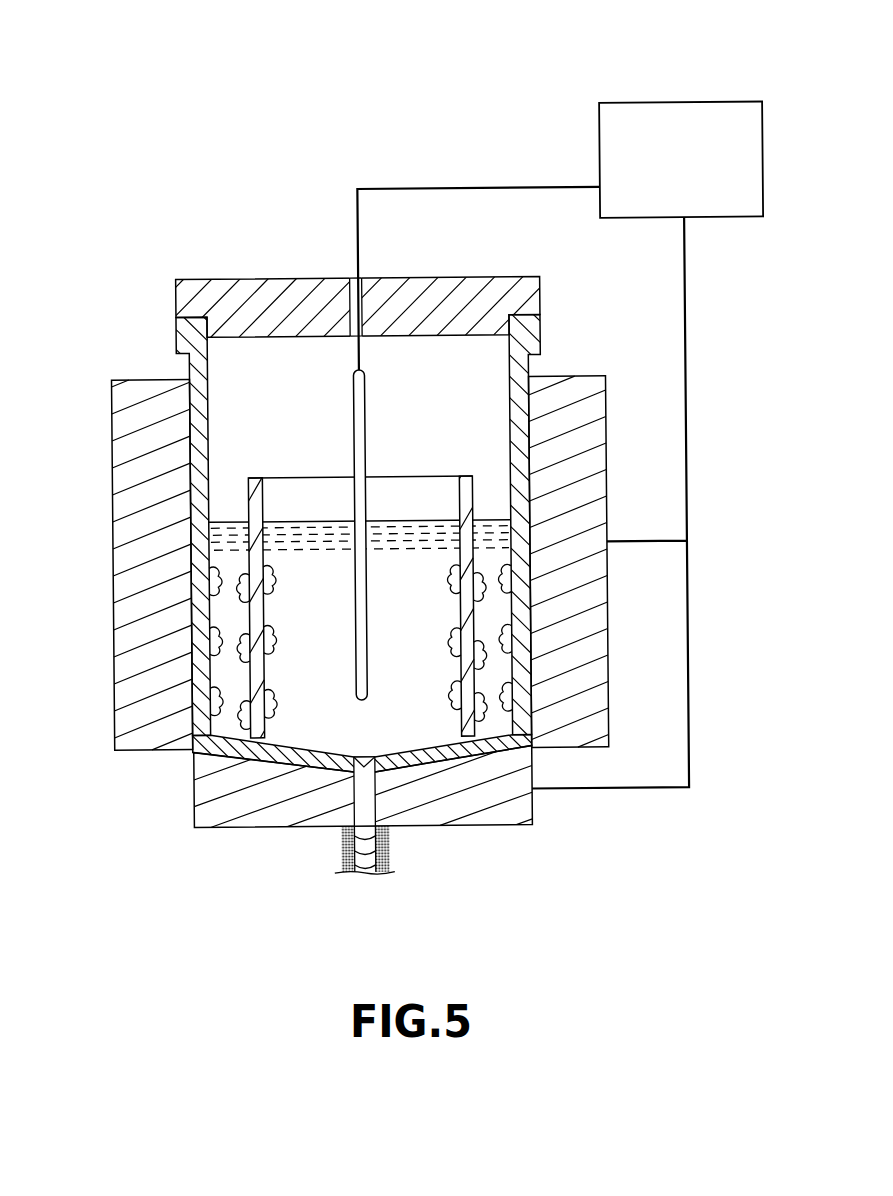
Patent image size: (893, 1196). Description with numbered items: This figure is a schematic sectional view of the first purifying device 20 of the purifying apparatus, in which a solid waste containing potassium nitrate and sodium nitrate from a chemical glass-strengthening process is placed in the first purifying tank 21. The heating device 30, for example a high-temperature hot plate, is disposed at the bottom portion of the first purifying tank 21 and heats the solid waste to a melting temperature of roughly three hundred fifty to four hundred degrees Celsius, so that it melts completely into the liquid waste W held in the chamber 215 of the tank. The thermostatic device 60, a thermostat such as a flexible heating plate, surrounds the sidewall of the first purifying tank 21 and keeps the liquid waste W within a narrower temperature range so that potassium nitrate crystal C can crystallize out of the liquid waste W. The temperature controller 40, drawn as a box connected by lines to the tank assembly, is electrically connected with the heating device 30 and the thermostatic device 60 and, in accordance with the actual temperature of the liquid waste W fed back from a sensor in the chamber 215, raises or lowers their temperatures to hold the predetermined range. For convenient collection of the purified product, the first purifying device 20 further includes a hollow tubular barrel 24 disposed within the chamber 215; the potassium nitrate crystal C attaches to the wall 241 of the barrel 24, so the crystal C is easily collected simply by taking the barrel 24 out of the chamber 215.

The first purifying device 20 is at (205, 248).
The first purifying tank 21 is at (172, 333).
The chamber 215 is at (239, 372).
The hollow tubular barrel 24 is at (248, 494).
The wall 241 is at (254, 686).
The thermostatic device 60 is at (142, 527).
The heating device 30 is at (462, 807).
The temperature controller 40 is at (686, 144).
The potassium nitrate crystal C is at (277, 713).
The liquid waste W is at (327, 722).